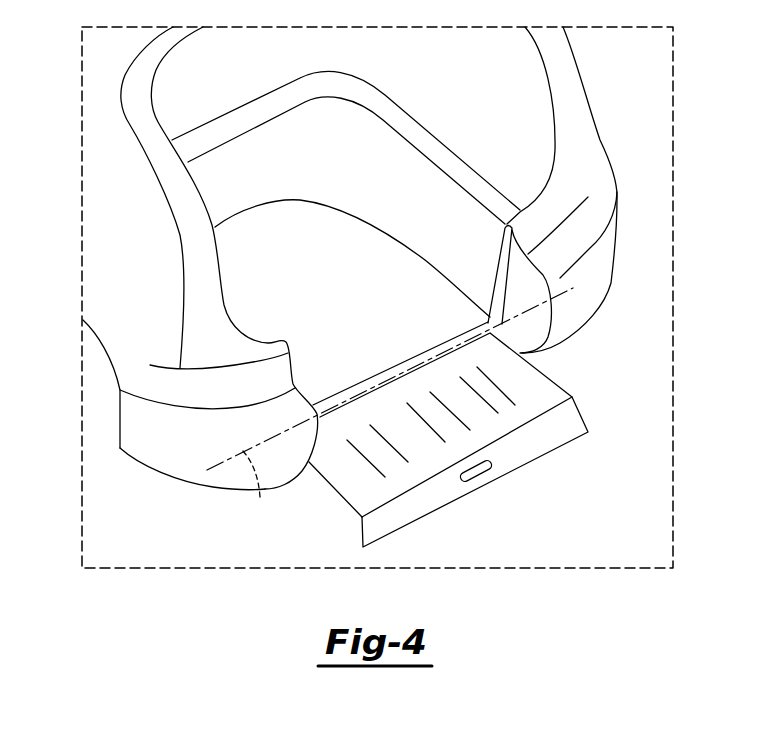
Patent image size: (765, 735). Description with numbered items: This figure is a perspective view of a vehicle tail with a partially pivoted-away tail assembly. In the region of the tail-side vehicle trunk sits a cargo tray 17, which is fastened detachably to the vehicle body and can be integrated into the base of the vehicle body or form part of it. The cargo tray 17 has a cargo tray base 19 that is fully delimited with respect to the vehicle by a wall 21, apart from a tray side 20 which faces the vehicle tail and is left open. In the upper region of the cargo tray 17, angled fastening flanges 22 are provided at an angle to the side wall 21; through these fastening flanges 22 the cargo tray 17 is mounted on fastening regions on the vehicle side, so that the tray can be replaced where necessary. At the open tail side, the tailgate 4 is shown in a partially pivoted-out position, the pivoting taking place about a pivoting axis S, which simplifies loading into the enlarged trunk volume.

The cargo tray 17 is at (327, 128).
The fastening flanges 22 is at (428, 147).
The wall 21 is at (423, 228).
The cargo tray base 19 is at (250, 288).
The tray side 20 is at (436, 363).
The tailgate 4 is at (410, 477).
The pivoting axis S is at (253, 492).